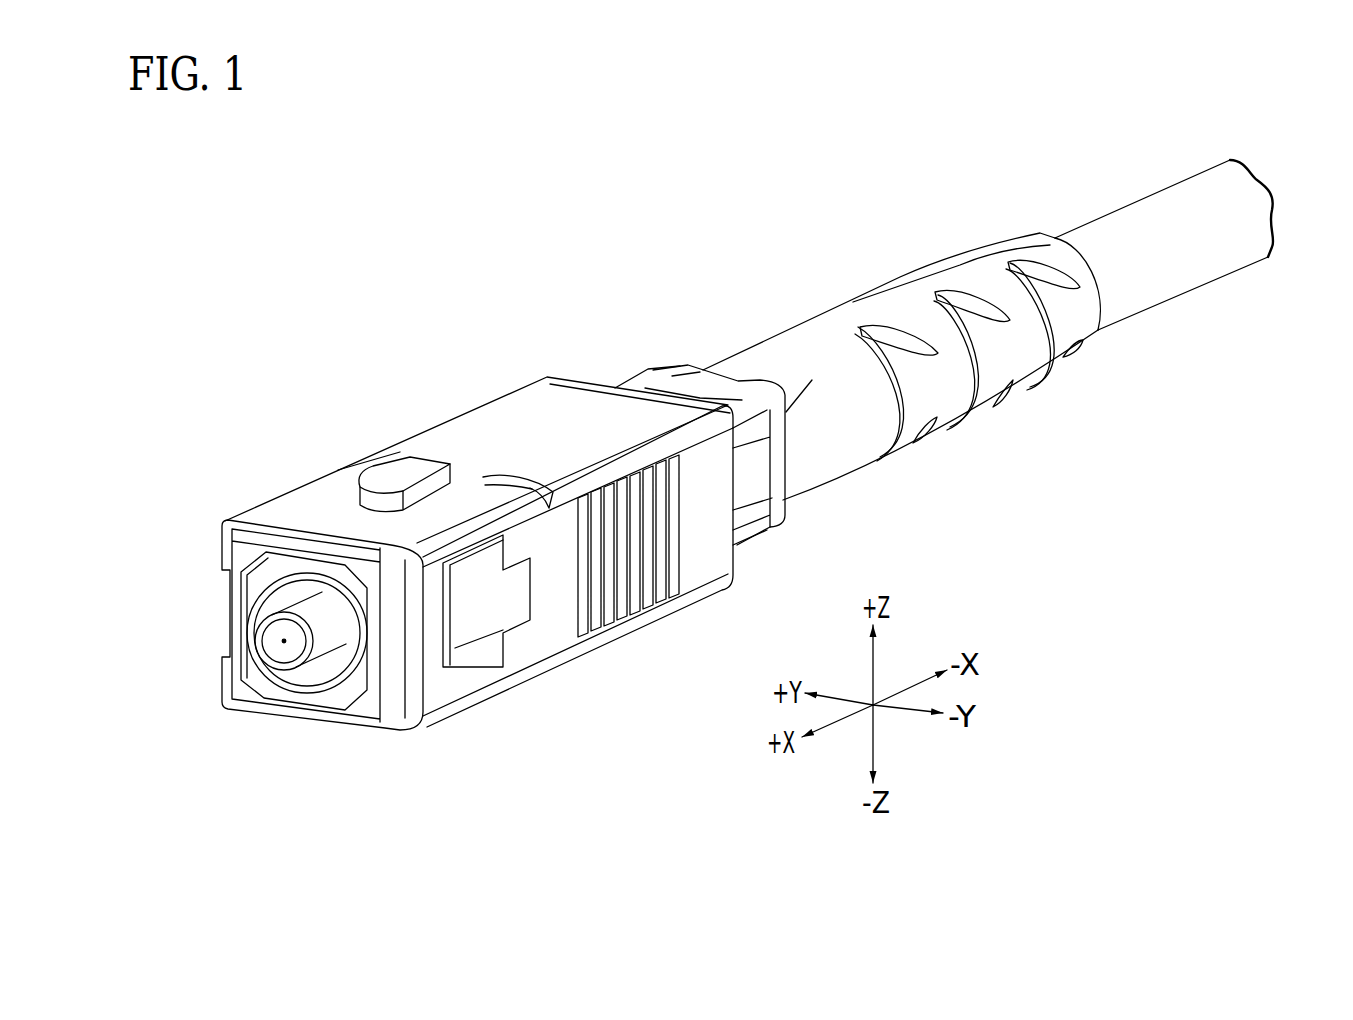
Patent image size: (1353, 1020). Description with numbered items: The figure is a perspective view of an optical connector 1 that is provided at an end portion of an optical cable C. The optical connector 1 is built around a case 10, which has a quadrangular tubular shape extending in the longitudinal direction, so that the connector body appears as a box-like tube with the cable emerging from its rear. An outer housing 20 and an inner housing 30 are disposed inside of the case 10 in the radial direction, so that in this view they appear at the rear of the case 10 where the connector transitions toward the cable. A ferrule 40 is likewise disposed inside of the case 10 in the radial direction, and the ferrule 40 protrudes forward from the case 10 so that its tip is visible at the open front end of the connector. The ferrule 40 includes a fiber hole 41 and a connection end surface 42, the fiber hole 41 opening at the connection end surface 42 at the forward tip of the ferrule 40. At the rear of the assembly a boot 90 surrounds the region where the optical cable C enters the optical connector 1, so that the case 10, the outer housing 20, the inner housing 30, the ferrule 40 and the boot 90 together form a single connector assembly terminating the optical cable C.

The optical connector 1 is at (287, 272).
The case 10 is at (300, 483).
The outer housing 20 is at (615, 382).
The inner housing 30 is at (680, 367).
The ferrule 40 is at (283, 602).
The fiber hole 41 is at (295, 661).
The connection end surface 42 is at (283, 642).
The boot 90 is at (818, 310).
The optical cable C is at (1145, 197).